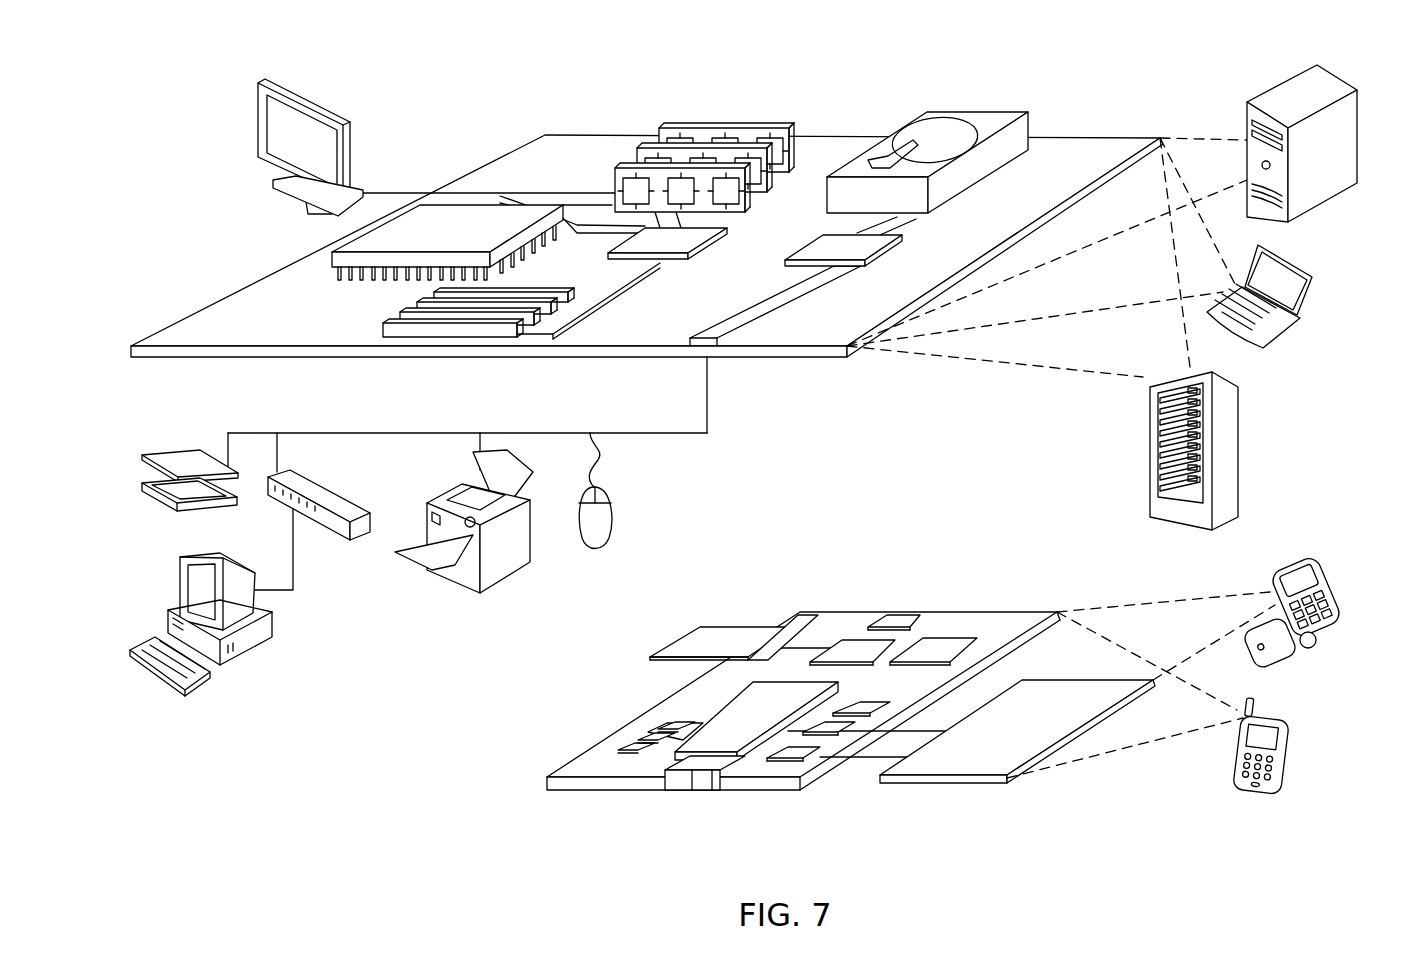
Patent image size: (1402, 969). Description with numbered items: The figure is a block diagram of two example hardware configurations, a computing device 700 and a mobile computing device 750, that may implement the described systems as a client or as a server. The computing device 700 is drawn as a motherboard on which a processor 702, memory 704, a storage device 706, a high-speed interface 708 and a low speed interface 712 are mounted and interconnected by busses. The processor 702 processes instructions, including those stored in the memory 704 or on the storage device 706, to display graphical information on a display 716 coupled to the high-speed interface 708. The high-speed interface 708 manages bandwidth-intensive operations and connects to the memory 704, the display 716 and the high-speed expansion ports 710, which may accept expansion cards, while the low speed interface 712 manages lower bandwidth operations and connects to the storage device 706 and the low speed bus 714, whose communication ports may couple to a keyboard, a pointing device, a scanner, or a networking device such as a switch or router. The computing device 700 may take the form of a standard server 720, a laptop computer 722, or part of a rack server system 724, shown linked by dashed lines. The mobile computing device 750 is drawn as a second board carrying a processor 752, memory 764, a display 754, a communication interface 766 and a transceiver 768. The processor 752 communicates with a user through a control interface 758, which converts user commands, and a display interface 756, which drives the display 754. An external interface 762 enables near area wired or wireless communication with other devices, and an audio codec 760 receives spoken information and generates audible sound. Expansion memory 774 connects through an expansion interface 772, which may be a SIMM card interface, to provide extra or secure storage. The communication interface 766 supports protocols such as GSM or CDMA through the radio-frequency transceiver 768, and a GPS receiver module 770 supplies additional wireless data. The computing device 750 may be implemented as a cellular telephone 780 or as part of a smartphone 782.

The computing device 700 is at (462, 104).
The processor 702 is at (332, 255).
The memory 704 is at (667, 125).
The storage device 706 is at (925, 113).
The high-speed interface 708 is at (643, 240).
The high-speed expansion ports 710 is at (395, 318).
The low speed interface 712 is at (820, 240).
The low speed bus 714 is at (715, 343).
The display 716 is at (262, 84).
The standard server 720 is at (1247, 120).
The laptop computer 722 is at (1312, 272).
The rack server system 724 is at (1150, 477).
The computing device 750 is at (515, 802).
The processor 752 is at (730, 752).
The display 754 is at (977, 763).
The display interface 756 is at (803, 758).
The control interface 758 is at (838, 734).
The audio codec 760 is at (863, 708).
The external interface 762 is at (693, 790).
The memory 764 is at (640, 735).
The communication interface 766 is at (855, 650).
The transceiver 768 is at (935, 650).
The GPS receiver module 770 is at (905, 612).
The expansion interface 772 is at (780, 622).
The expansion memory 774 is at (697, 630).
The cellular telephone 780 is at (1277, 588).
The smartphone 782 is at (1237, 747).